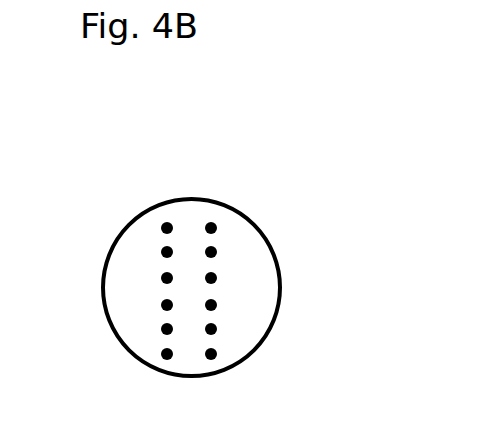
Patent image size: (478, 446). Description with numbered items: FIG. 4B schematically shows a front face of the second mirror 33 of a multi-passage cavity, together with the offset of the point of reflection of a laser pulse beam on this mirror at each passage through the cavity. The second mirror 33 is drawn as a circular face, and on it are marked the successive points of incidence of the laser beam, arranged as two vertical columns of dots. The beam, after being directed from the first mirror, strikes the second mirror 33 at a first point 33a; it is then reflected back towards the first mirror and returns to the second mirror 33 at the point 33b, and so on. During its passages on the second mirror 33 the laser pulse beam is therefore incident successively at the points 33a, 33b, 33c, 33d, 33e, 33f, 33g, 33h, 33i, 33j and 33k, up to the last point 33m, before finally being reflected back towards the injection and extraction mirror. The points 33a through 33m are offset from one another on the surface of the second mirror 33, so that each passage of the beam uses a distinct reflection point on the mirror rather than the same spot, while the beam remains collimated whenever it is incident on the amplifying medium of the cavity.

The second mirror 33 is at (180, 199).
The first point 33a is at (165, 355).
The point 33b is at (213, 226).
The point 33c is at (165, 329).
The point 33d is at (213, 252).
The point 33e is at (165, 305).
The point 33f is at (213, 280).
The point 33g is at (165, 278).
The point 33h is at (213, 305).
The point 33i is at (165, 251).
The point 33j is at (213, 330).
The point 33k is at (165, 227).
The point 33m is at (213, 356).